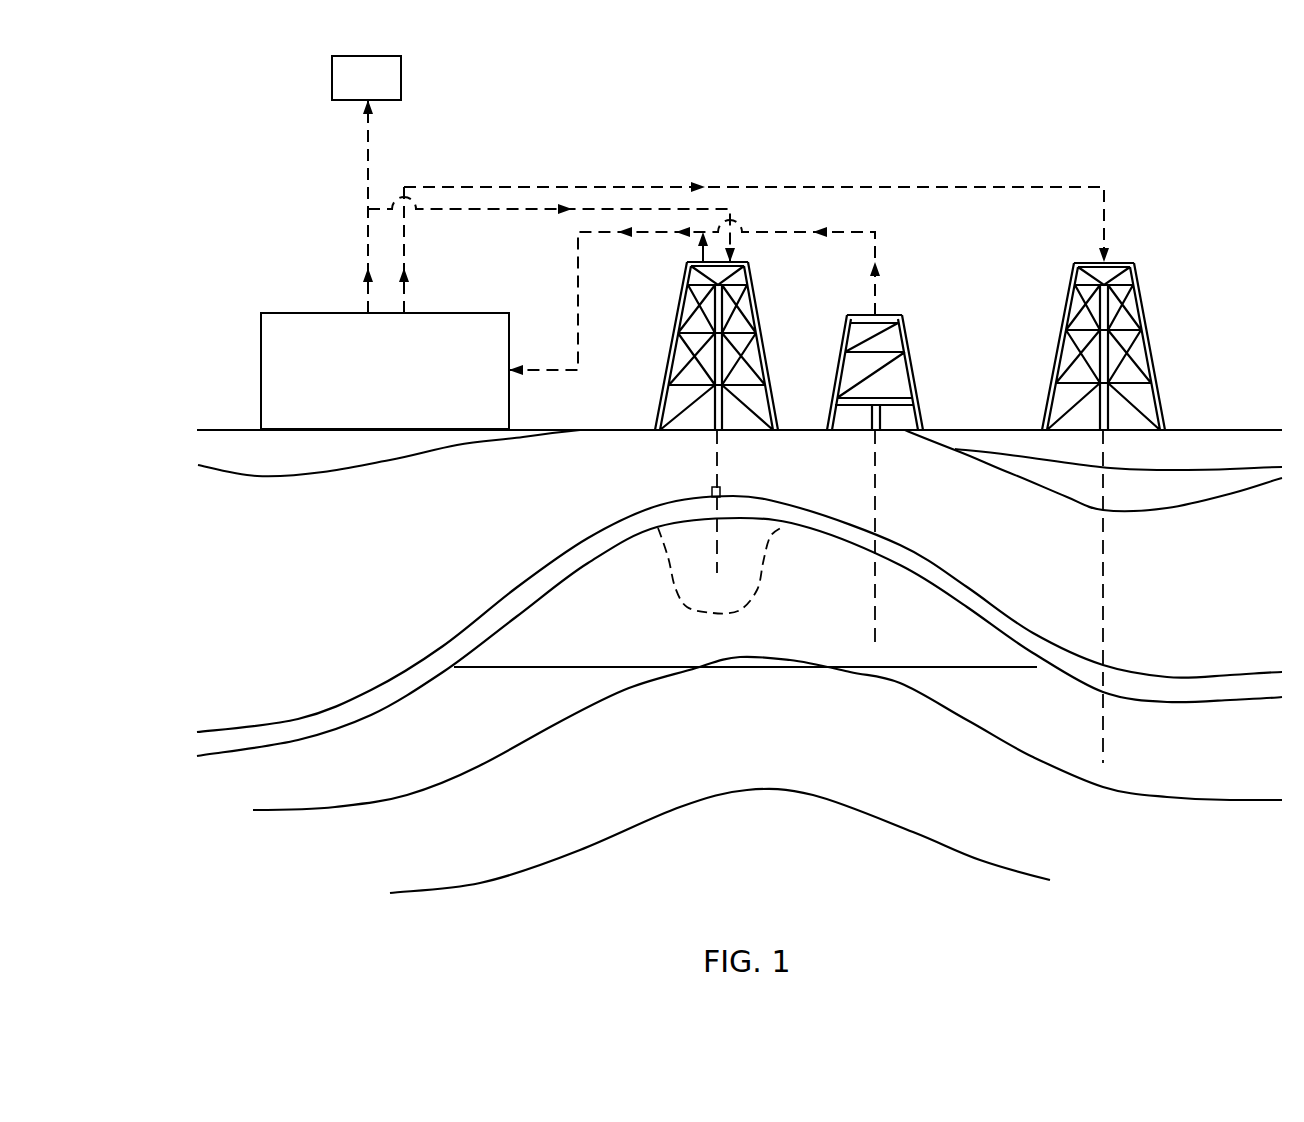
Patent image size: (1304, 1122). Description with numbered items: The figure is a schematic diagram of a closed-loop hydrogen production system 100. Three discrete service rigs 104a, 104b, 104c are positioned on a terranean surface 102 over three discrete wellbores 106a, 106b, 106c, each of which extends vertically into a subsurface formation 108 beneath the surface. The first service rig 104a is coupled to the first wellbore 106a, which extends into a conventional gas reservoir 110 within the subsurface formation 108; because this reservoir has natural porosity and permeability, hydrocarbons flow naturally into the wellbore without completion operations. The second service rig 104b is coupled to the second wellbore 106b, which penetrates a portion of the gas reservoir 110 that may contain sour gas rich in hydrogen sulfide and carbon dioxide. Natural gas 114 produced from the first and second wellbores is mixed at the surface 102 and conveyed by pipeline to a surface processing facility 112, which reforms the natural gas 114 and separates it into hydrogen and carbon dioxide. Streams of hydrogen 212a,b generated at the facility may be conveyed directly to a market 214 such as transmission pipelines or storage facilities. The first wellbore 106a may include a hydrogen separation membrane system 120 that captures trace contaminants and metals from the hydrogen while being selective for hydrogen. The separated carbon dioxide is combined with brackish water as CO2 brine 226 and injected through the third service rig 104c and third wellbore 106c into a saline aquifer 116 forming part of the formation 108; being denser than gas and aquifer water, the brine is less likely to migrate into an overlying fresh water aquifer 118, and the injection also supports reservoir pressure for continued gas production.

The closed-loop hydrogen production system 100 is at (1194, 100).
The terranean surface 102 is at (1240, 429).
The first service rig 104a is at (757, 305).
The second service rig 104b is at (910, 344).
The third service rig 104c is at (1145, 305).
The first wellbore 106a is at (717, 435).
The second wellbore 106b is at (875, 500).
The third wellbore 106c is at (1103, 583).
The subsurface formation 108 is at (232, 547).
The conventional gas reservoir 110 is at (608, 630).
The surface processing facility 112 is at (405, 383).
The natural gas 114 is at (578, 312).
The saline aquifer 116 is at (1185, 783).
The fresh water aquifer 118 is at (1158, 499).
The hydrogen separation membrane system 120 is at (712, 492).
The streams of hydrogen 212a,b is at (366, 184).
The market 214 is at (384, 90).
The CO2 brine 226 is at (507, 185).